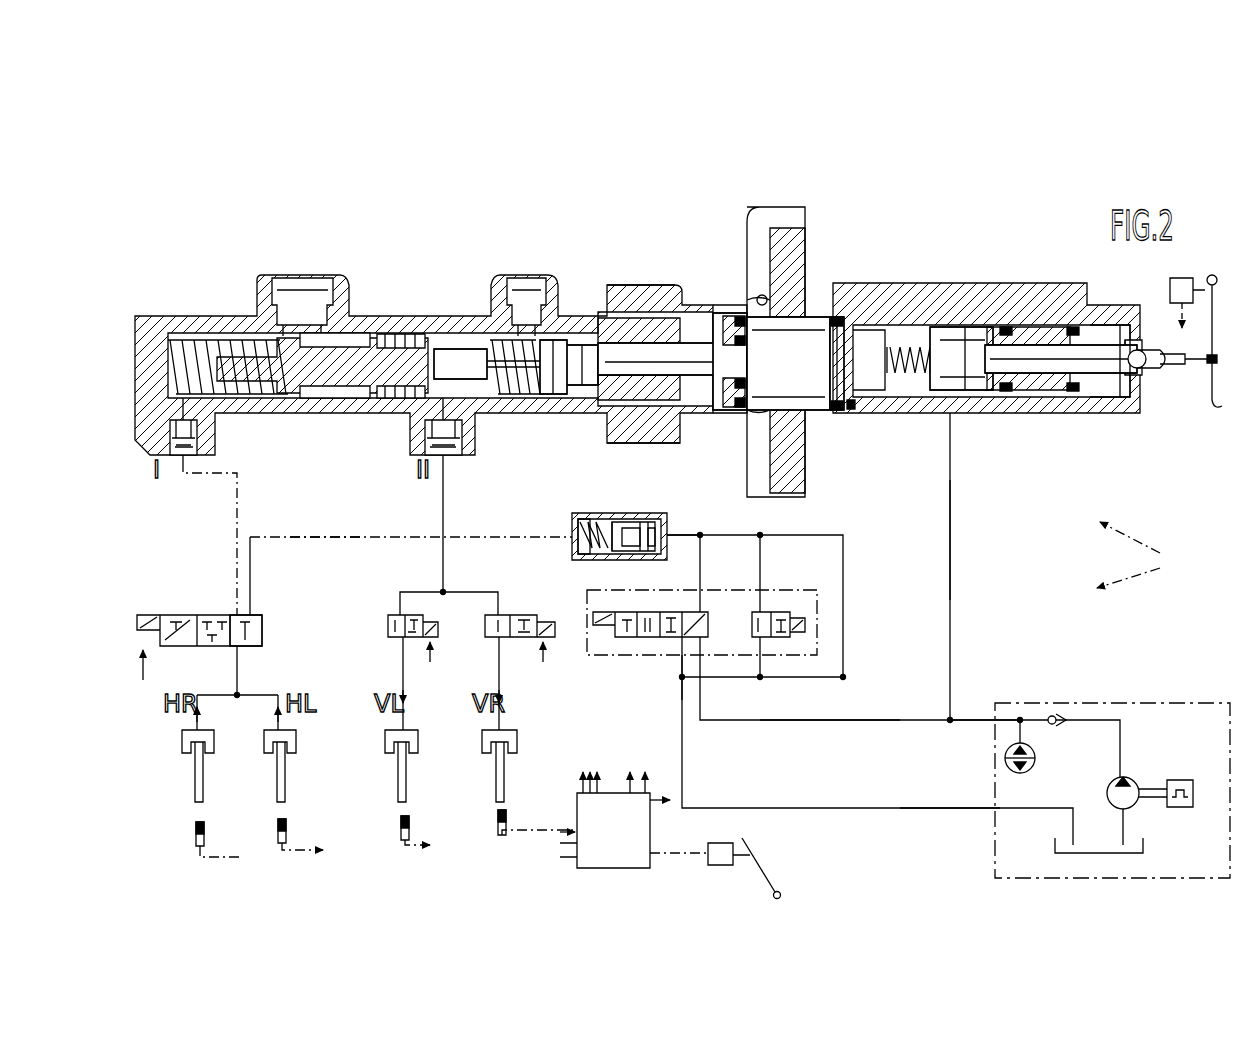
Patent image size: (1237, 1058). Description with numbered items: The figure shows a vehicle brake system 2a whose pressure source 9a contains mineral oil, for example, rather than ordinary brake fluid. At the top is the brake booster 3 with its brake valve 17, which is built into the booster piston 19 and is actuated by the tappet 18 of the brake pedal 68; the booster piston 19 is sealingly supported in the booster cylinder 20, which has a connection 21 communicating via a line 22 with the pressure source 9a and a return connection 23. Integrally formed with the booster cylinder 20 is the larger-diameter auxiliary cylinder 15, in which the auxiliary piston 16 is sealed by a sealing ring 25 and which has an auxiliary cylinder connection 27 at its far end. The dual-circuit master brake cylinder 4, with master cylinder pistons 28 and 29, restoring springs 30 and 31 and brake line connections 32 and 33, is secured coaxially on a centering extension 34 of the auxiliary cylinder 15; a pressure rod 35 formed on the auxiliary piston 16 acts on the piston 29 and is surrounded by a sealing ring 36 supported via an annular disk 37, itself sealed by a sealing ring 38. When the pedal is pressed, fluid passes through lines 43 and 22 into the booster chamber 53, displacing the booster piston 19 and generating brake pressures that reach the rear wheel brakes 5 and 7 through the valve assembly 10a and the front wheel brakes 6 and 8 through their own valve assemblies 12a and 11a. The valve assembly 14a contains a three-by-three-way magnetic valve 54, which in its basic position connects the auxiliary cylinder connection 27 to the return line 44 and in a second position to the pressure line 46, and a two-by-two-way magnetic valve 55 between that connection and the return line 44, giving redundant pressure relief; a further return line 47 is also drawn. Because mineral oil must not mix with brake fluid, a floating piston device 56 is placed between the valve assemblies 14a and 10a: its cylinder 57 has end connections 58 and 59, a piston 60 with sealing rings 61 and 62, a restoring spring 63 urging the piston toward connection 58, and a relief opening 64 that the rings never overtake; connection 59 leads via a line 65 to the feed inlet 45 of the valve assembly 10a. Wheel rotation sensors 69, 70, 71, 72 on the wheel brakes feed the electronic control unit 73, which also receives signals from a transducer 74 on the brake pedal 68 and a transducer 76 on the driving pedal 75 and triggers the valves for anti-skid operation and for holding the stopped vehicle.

The vehicle brake system 2a is at (1147, 555).
The brake booster 3 is at (1067, 280).
The dual-circuit master brake cylinder 4 is at (423, 298).
The wheel brake 5 is at (296, 738).
The wheel brake 6 is at (517, 742).
The wheel brake 7 is at (214, 738).
The wheel brake 8 is at (418, 742).
The pressure source 9a is at (1100, 703).
The valve assembly 10a is at (262, 632).
The valve assembly 11a is at (388, 618).
The valve assembly 12a is at (522, 612).
The valve assembly 14a is at (790, 592).
The auxiliary cylinder 15 is at (803, 318).
The auxiliary piston 16 is at (853, 333).
The brake valve 17 is at (980, 313).
The tappet 18 is at (1170, 366).
The booster piston 19 is at (1067, 317).
The booster cylinder 20 is at (1107, 403).
The connection 21 is at (957, 397).
The line 22 is at (952, 590).
The return connection 23 is at (847, 410).
The sealing ring 25 is at (837, 312).
The auxiliary cylinder connection 27 is at (800, 445).
The master cylinder piston 28 is at (357, 360).
The master cylinder piston 29 is at (590, 318).
The restoring spring 30 is at (203, 338).
The restoring spring 31 is at (487, 340).
The brake line connection 32 is at (205, 453).
The brake line connection 33 is at (455, 455).
The centering extension 34 is at (623, 296).
The pressure rod 35 is at (777, 350).
The sealing ring 36 is at (713, 330).
The annular disk 37 is at (748, 297).
The sealing ring 38 is at (737, 412).
The line 43 is at (990, 718).
The return line 44 is at (952, 806).
The feed inlet 45 is at (262, 618).
The pressure line 46 is at (820, 722).
The return line 47 is at (682, 665).
The booster chamber 53 is at (993, 385).
The 3/3-way magnetic valve 54 is at (625, 640).
The 2/2-way magnetic valve 55 is at (760, 630).
The floating piston device 56 is at (590, 500).
The cylinder 57 is at (643, 518).
The connection 58 is at (668, 545).
The connection 59 is at (572, 540).
The piston 60 is at (628, 516).
The sealing ring 61 is at (645, 554).
The sealing ring 62 is at (610, 553).
The restoring spring 63 is at (572, 522).
The relief opening 64 is at (630, 556).
The line 65 is at (362, 538).
The brake pedal 68 is at (1213, 408).
The wheel rotation sensor 69 is at (278, 826).
The wheel rotation sensor 70 is at (498, 818).
The wheel rotation sensor 71 is at (195, 828).
The wheel rotation sensor 72 is at (400, 822).
The electronic control unit 73 is at (610, 862).
The signal transducer 74 is at (1170, 290).
The driving pedal 75 is at (765, 862).
The signal transducer 76 is at (720, 864).